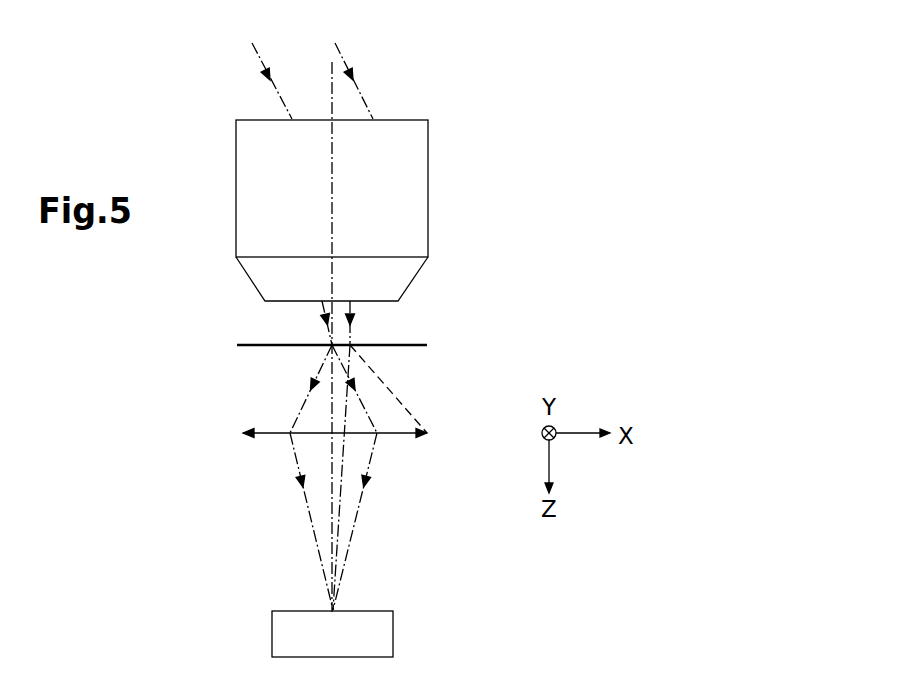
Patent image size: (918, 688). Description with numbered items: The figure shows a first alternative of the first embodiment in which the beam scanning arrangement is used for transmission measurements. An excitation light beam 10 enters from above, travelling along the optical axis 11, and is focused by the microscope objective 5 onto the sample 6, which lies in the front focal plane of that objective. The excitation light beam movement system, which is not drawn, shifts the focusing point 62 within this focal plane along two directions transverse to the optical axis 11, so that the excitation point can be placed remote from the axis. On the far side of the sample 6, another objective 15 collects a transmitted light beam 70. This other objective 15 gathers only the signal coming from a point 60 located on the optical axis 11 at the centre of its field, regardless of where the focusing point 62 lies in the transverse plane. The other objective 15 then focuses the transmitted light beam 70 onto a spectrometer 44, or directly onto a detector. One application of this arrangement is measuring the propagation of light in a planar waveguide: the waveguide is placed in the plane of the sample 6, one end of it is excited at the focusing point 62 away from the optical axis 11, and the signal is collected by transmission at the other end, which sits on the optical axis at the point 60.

The microscope objective 5 is at (410, 182).
The sample 6 is at (408, 347).
The excitation light beam 10 is at (278, 95).
The optical axis 11 is at (332, 83).
The other objective 15 is at (417, 440).
The spectrometer 44 is at (377, 628).
The point on the optical axis 60 is at (331, 347).
The focusing point 62 is at (350, 345).
The transmitted light beam 70 is at (298, 407).